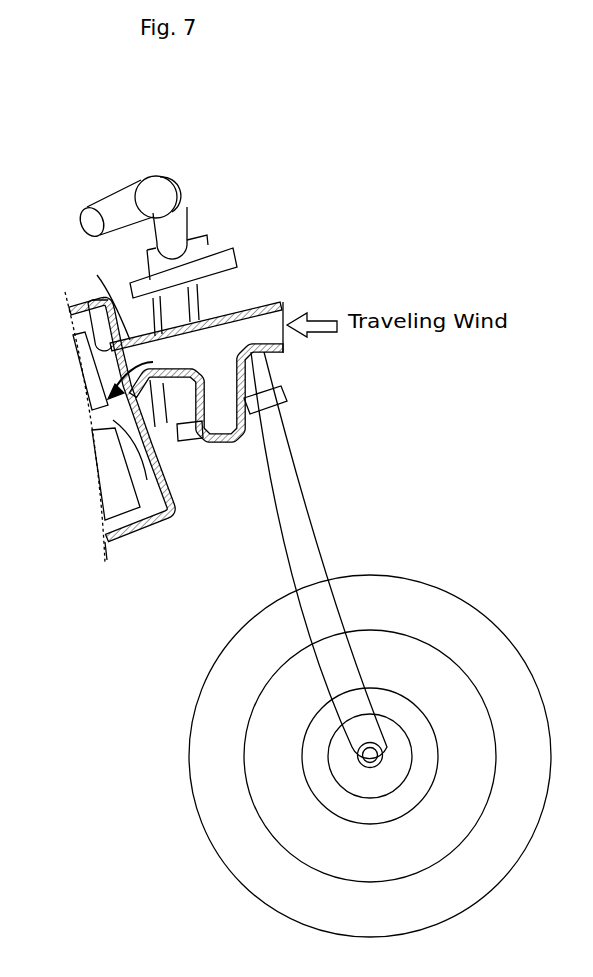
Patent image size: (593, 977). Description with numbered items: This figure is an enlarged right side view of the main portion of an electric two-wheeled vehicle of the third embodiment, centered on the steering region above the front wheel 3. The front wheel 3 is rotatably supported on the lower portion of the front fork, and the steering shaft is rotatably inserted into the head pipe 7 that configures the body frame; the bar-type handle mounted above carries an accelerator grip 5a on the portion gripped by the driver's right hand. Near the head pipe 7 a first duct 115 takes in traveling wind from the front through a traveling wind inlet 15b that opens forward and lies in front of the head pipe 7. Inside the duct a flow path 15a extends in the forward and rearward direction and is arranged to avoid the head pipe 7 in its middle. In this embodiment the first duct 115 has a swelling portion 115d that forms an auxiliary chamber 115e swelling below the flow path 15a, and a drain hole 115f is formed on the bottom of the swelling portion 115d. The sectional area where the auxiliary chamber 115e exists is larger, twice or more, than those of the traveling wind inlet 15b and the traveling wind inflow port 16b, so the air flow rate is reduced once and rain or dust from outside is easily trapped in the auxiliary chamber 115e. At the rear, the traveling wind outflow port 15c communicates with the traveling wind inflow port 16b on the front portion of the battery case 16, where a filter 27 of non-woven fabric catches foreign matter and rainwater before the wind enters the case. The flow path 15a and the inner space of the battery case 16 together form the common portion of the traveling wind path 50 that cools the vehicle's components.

The front wheel 3 is at (482, 610).
The accelerator grip 5a is at (113, 193).
The head pipe 7 is at (170, 307).
The flow path 15a is at (247, 327).
The traveling wind inlet 15b is at (285, 313).
The traveling wind outflow port 15c is at (160, 420).
The battery case 16 is at (134, 535).
The traveling wind inflow port 16b is at (93, 303).
The filter 27 is at (102, 313).
The traveling wind path 50 is at (158, 522).
The first duct 115 is at (250, 358).
The swelling portion 115d is at (245, 390).
The auxiliary chamber 115e is at (227, 407).
The drain hole 115f is at (222, 442).